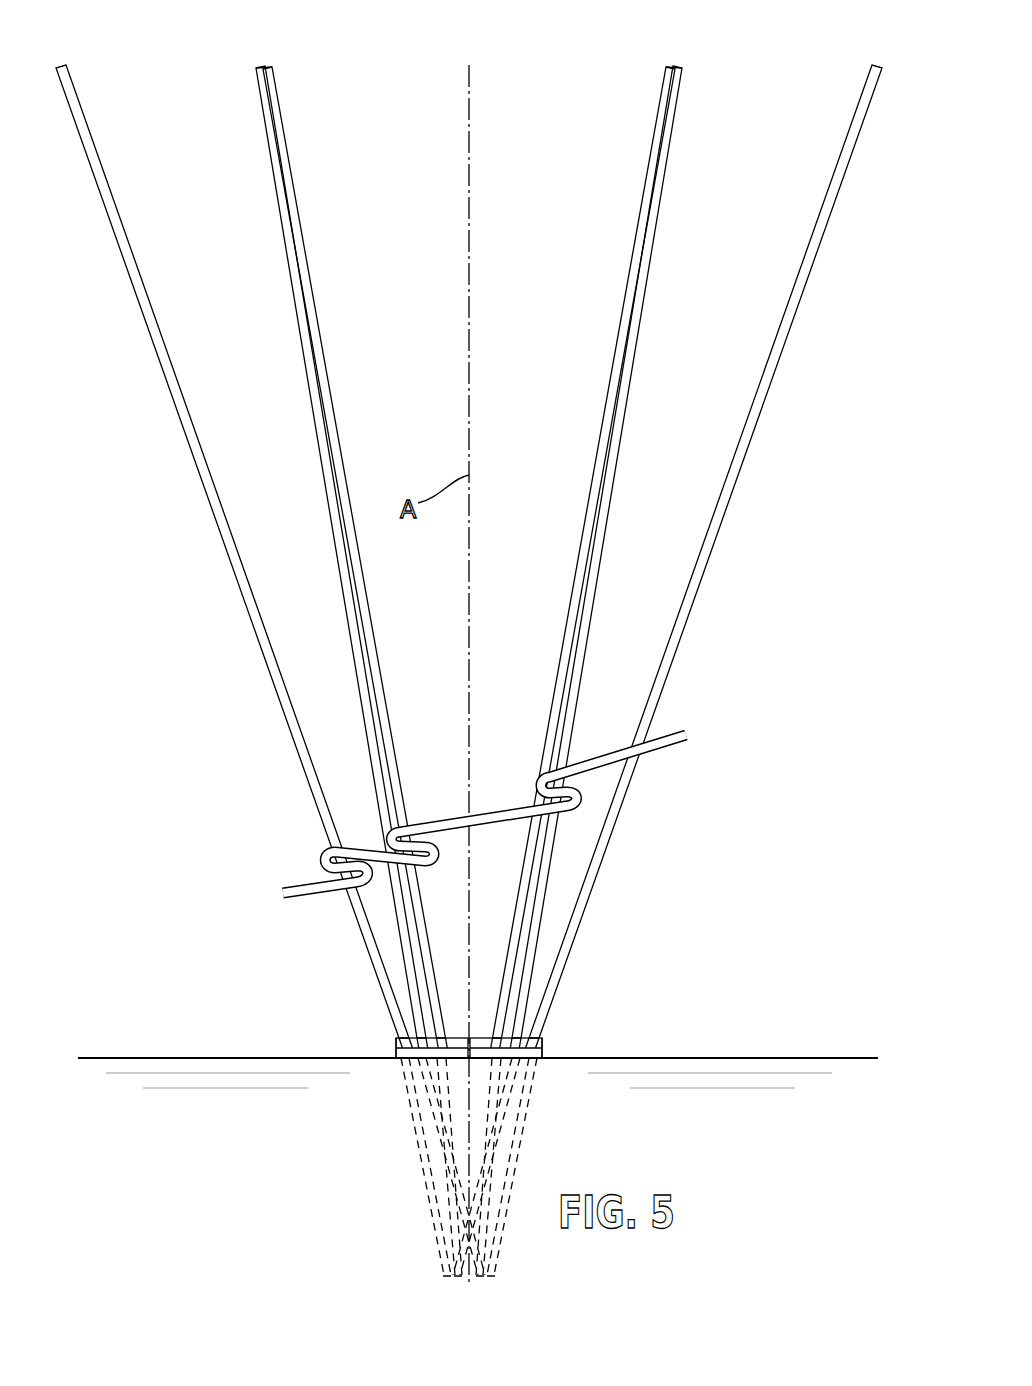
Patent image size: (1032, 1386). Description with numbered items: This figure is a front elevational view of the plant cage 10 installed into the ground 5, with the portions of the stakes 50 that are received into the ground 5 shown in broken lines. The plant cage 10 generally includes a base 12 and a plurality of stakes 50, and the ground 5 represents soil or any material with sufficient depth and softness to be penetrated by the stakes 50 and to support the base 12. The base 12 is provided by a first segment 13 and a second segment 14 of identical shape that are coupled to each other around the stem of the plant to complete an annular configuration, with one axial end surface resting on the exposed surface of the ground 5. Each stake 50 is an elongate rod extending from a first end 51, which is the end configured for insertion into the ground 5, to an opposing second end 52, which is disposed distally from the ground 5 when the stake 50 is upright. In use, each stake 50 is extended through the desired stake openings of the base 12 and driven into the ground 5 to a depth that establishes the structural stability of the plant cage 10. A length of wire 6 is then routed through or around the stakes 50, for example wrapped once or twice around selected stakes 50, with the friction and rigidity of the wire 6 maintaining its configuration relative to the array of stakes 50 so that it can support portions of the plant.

The ground 5 is at (224, 1057).
The wire 6 is at (656, 752).
The plant cage 10 is at (180, 528).
The base 12 is at (550, 1044).
The first segment 13 is at (396, 1063).
The second segment 14 is at (545, 1063).
The stake 50 is at (340, 578).
The first end 51 is at (445, 1280).
The second end 52 is at (58, 64).